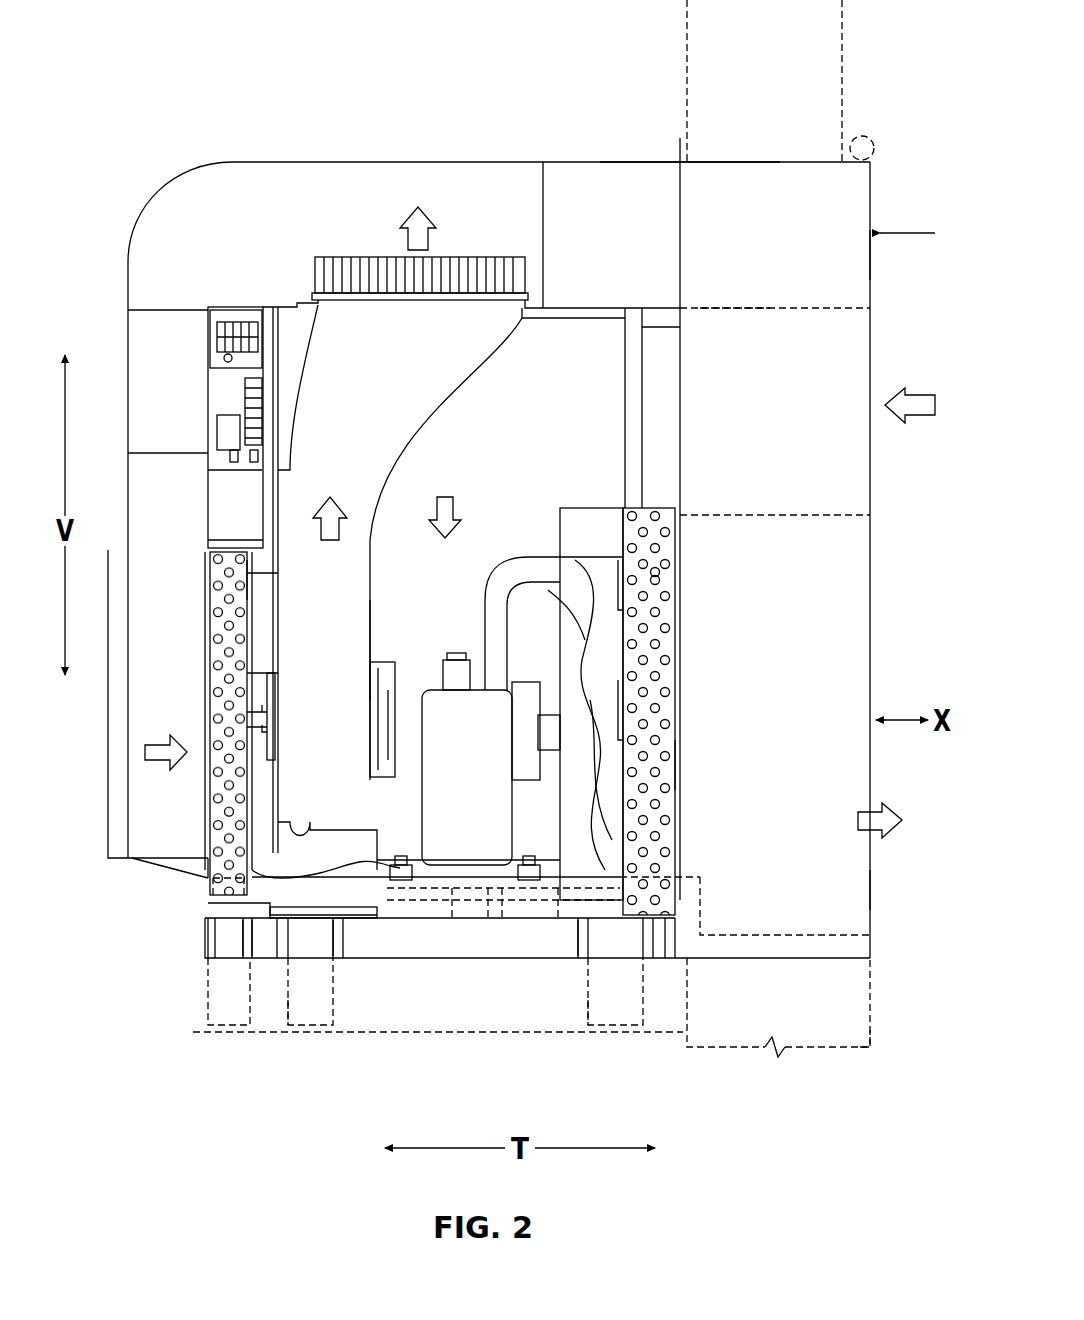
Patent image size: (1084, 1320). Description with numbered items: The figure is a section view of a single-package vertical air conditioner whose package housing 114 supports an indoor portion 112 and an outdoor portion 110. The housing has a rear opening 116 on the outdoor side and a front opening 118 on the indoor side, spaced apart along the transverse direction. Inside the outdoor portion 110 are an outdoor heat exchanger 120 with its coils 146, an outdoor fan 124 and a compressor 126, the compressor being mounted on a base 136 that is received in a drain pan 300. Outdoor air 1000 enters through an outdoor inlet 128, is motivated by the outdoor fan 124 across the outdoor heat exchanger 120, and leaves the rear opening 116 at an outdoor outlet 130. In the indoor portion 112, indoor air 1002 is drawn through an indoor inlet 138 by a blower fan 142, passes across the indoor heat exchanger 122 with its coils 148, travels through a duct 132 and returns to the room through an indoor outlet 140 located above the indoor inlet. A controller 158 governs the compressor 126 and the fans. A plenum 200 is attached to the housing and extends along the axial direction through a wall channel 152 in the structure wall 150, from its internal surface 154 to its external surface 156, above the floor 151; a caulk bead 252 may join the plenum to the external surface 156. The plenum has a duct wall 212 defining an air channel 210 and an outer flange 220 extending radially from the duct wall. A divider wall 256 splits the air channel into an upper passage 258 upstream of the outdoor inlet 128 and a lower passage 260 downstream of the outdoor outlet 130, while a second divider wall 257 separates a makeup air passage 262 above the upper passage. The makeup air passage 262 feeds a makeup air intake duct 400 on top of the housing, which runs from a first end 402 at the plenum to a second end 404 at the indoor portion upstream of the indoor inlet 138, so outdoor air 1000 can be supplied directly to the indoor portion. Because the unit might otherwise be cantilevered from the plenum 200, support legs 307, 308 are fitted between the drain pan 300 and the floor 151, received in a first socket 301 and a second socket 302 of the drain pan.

The outdoor portion 110 is at (540, 446).
The indoor portion 112 is at (298, 787).
The package housing 114 is at (570, 306).
The rear opening 116 is at (668, 792).
The front opening 118 is at (210, 823).
The outdoor heat exchanger 120 is at (630, 508).
The indoor heat exchanger 122 is at (243, 607).
The outdoor fan 124 is at (548, 590).
The compressor 126 is at (438, 690).
The outdoor inlet 128 is at (664, 476).
The outdoor outlet 130 is at (668, 766).
The duct 132 is at (480, 347).
The base 136 is at (235, 903).
The indoor inlet 138 is at (204, 665).
The indoor outlet 140 is at (315, 277).
The blower fan 142 is at (275, 677).
The coils 146 is at (660, 573).
The coils 148 is at (233, 632).
The structure wall 150 is at (870, 1016).
The floor 151 is at (430, 1033).
The wall channel 152 is at (740, 158).
The internal surface 154 is at (688, 56).
The external surface 156 is at (843, 56).
The controller 158 is at (245, 396).
The plenum 200 is at (868, 893).
The air channel 210 is at (735, 958).
The duct wall 212 is at (868, 348).
The outer flange 220 is at (680, 156).
The caulk bead 252 is at (875, 148).
The divider wall 256 is at (818, 518).
The second divider wall 257 is at (782, 310).
The upper passage 258 is at (782, 470).
The lower passage 260 is at (793, 820).
The makeup air passage 262 is at (860, 257).
The drain pan 300 is at (205, 931).
The first socket 301 is at (343, 926).
The second socket 302 is at (252, 936).
The support leg 307 is at (333, 1010).
The support leg 308 is at (208, 990).
The makeup air intake duct 400 is at (264, 196).
The first end 402 is at (682, 241).
The second end 404 is at (162, 456).
The outdoor air 1000 is at (935, 233).
The indoor air 1002 is at (420, 207).